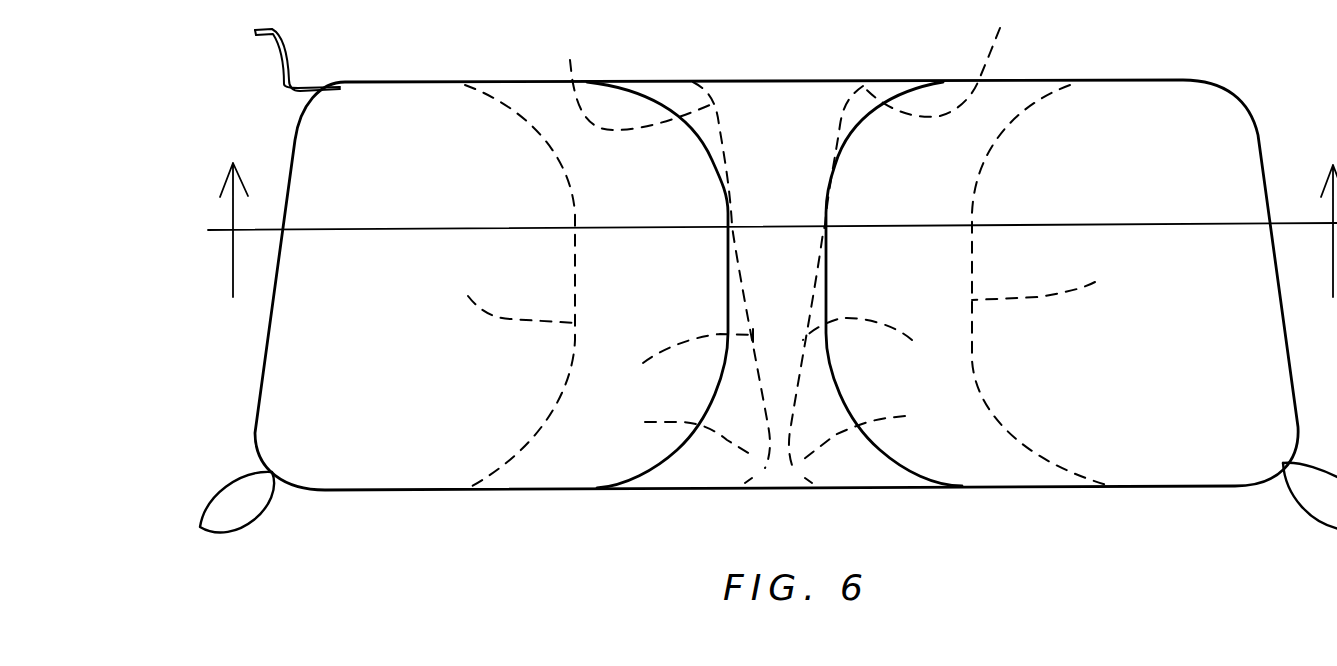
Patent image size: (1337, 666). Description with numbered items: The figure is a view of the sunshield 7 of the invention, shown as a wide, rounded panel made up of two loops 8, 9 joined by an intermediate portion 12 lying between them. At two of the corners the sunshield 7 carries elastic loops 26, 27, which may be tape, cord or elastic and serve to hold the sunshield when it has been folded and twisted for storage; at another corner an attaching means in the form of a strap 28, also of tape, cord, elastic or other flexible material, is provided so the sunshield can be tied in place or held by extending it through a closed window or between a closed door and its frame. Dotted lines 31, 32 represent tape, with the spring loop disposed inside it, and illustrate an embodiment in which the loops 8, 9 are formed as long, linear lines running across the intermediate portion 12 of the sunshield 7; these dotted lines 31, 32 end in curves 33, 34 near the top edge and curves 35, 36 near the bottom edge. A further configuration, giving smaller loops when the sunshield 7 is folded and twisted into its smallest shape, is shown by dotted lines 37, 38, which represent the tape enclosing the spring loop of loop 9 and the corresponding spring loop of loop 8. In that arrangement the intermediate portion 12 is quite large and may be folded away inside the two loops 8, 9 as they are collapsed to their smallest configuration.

The sunshield 7 is at (727, 530).
The loop 8 is at (428, 356).
The loop 9 is at (1162, 353).
The intermediate portion 12 is at (790, 165).
The elastic loop 26 is at (233, 537).
The elastic loop 27 is at (1315, 525).
The strap 28 is at (292, 65).
The dotted line 31 is at (679, 353).
The dotted line 32 is at (874, 345).
The curve 33 is at (634, 78).
The curve 34 is at (941, 58).
The curve 35 is at (678, 432).
The curve 36 is at (876, 432).
The dotted line 37 is at (510, 287).
The dotted line 38 is at (1050, 285).